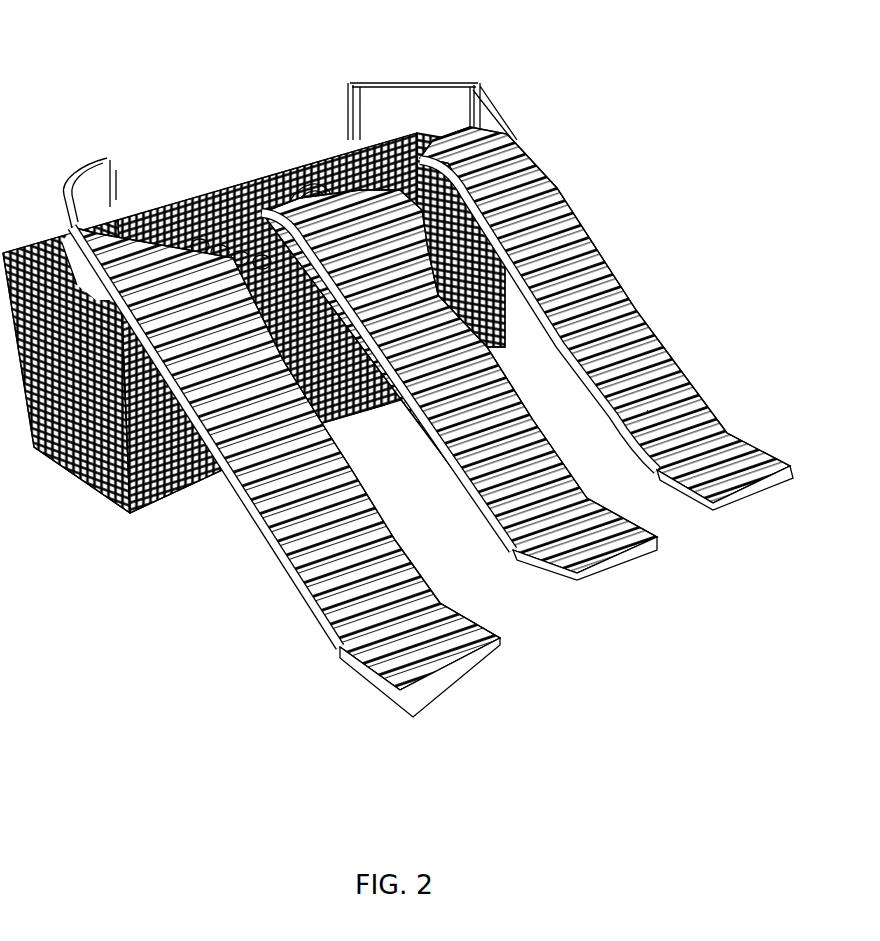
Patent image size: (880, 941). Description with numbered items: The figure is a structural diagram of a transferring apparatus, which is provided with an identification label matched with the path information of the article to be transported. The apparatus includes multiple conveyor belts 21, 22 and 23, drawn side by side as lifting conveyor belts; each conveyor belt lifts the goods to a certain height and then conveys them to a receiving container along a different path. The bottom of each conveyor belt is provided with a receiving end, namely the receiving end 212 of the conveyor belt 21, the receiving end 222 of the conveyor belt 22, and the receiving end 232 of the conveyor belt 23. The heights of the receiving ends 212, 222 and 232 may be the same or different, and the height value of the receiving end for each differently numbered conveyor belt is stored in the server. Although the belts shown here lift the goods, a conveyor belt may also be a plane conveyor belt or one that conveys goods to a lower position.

The conveyor belt 21 is at (305, 553).
The receiving end 212 is at (433, 660).
The conveyor belt 22 is at (330, 202).
The receiving end 222 is at (593, 537).
The conveyor belt 23 is at (603, 277).
The receiving end 232 is at (720, 470).